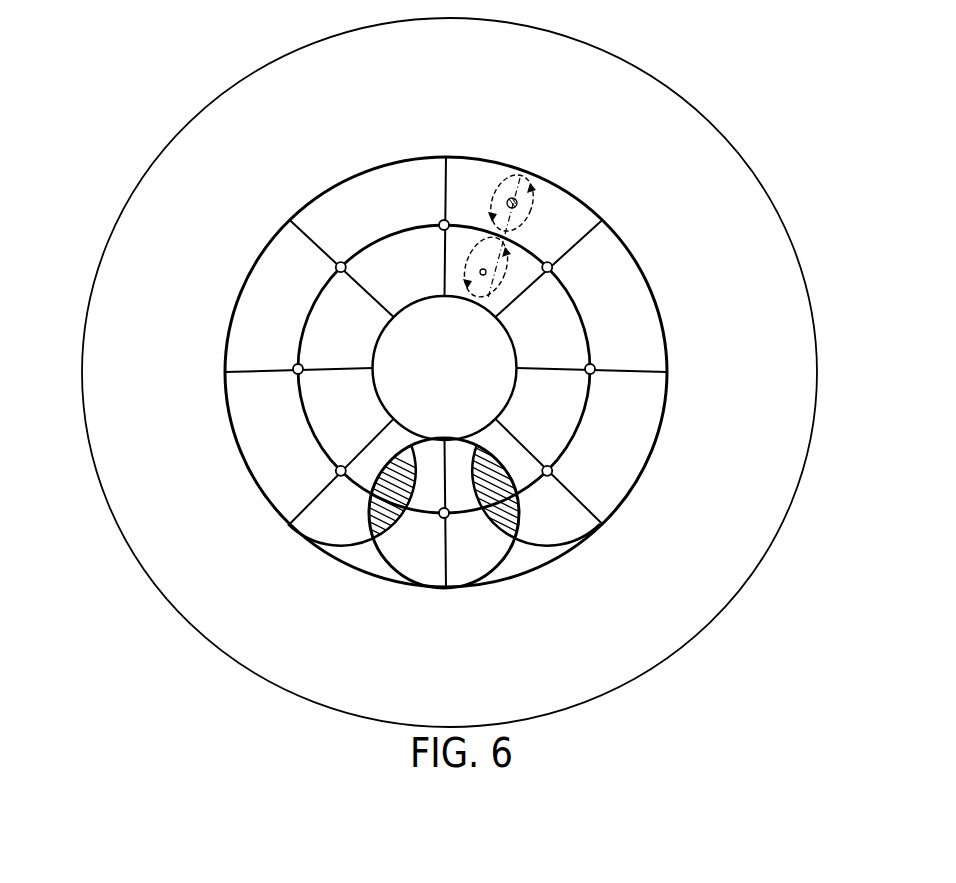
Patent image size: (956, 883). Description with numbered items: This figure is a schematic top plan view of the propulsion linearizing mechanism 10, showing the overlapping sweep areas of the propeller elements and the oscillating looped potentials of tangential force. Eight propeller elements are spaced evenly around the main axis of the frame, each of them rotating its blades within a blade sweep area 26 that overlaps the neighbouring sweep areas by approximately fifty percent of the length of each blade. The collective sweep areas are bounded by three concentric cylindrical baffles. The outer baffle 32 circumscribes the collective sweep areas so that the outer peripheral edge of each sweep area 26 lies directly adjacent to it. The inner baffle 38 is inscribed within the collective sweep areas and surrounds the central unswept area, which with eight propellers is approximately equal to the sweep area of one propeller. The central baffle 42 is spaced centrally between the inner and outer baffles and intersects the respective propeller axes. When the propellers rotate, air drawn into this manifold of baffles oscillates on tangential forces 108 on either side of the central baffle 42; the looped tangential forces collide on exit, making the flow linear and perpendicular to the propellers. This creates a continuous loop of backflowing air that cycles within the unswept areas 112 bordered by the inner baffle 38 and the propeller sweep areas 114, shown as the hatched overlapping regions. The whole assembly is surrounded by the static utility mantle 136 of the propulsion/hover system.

The propulsion linearizing mechanism 10 is at (164, 62).
The blade sweep area 26 is at (470, 552).
The outer baffle 32 is at (322, 192).
The inner baffle 38 is at (380, 405).
The central baffle 42 is at (580, 307).
The tangential forces 108 is at (483, 273).
The unswept areas 112 is at (477, 445).
The propeller sweep areas 114 is at (425, 487).
The static utility mantle 136 is at (233, 633).